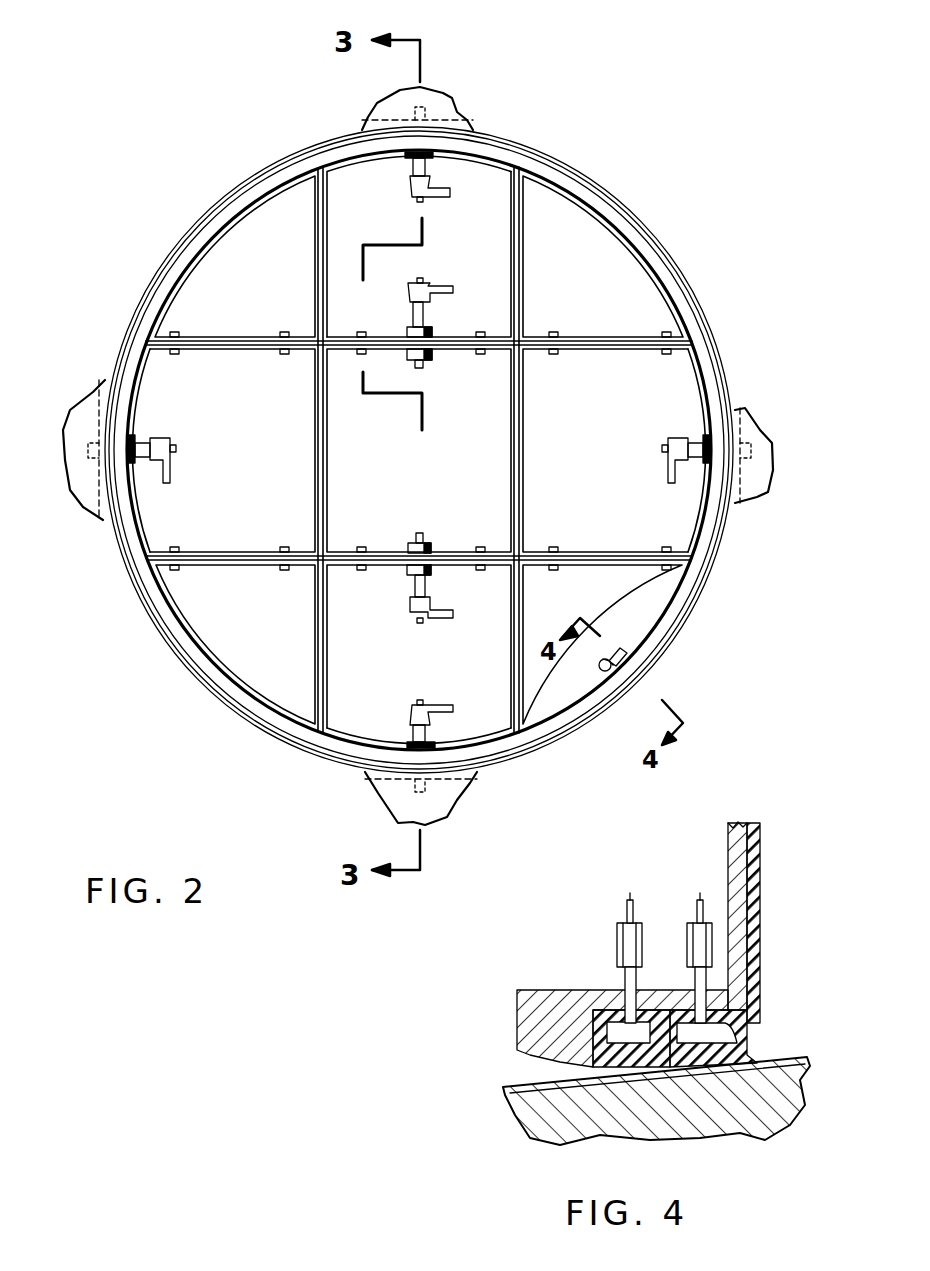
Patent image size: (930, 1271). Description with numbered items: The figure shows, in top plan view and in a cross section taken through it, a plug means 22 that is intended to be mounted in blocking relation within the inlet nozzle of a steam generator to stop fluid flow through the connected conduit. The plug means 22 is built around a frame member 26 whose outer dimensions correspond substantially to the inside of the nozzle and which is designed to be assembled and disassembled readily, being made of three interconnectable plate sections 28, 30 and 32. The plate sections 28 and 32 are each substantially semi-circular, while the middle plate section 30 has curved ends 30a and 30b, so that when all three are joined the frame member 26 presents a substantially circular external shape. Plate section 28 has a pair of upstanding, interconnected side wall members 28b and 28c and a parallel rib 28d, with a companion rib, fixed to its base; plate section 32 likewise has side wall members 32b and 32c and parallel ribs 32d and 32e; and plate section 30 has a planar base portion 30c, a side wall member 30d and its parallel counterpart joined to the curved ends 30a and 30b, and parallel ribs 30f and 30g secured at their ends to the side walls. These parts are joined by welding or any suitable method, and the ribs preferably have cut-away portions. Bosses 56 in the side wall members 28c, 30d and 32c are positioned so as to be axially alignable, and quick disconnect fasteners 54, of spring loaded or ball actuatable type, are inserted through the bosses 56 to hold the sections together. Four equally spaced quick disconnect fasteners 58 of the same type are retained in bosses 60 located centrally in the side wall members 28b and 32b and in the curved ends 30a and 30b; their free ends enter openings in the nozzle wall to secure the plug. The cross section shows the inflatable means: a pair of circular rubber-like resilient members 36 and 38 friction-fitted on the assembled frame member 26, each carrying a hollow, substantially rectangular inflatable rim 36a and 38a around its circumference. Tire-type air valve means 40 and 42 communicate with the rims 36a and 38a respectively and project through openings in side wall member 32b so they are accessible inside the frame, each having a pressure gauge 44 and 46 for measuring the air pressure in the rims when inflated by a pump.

In FIG. 2, the plug means 22 is at (712, 606).
In FIG. 2, the frame member 26 is at (666, 297).
In FIG. 2, the plate section 28 is at (600, 308).
In FIG. 2, the side wall member 28b is at (436, 150).
In FIG. 2, the side wall member 28c is at (509, 335).
In FIG. 2, the rib 28d is at (318, 280).
In FIG. 2, the plate section 30 is at (612, 416).
In FIG. 2, the curved end 30a is at (137, 392).
In FIG. 2, the curved end 30b is at (700, 370).
In FIG. 2, the planar base portion 30c is at (347, 548).
In FIG. 2, the side wall member 30d is at (345, 352).
In FIG. 2, the rib 30f is at (316, 392).
In FIG. 2, the rib 30g is at (522, 452).
In FIG. 2, the plate section 32 is at (635, 611).
In FIG. 2, the side wall member 32b is at (346, 722).
In FIG. 2, the side wall member 32c is at (346, 568).
In FIG. 2, the rib 32d is at (325, 673).
In FIG. 2, the rib 32e is at (602, 644).
In FIG. 4, the resilient member 36 is at (593, 1012).
In FIG. 4, the rim 36a is at (593, 1073).
In FIG. 4, the resilient member 38 is at (760, 978).
In FIG. 4, the rim 38a is at (750, 1040).
In FIG. 4, the air valve means 40 is at (614, 983).
In FIG. 4, the air valve means 42 is at (690, 970).
In FIG. 4, the pressure gauge 44 is at (617, 945).
In FIG. 4, the pressure gauge 46 is at (688, 945).
In FIG. 2, the quick disconnect fastener 54 is at (432, 290).
In FIG. 2, the boss 56 is at (407, 333).
In FIG. 2, the quick disconnect fastener 58 is at (410, 184).
In FIG. 2, the boss 60 is at (408, 157).